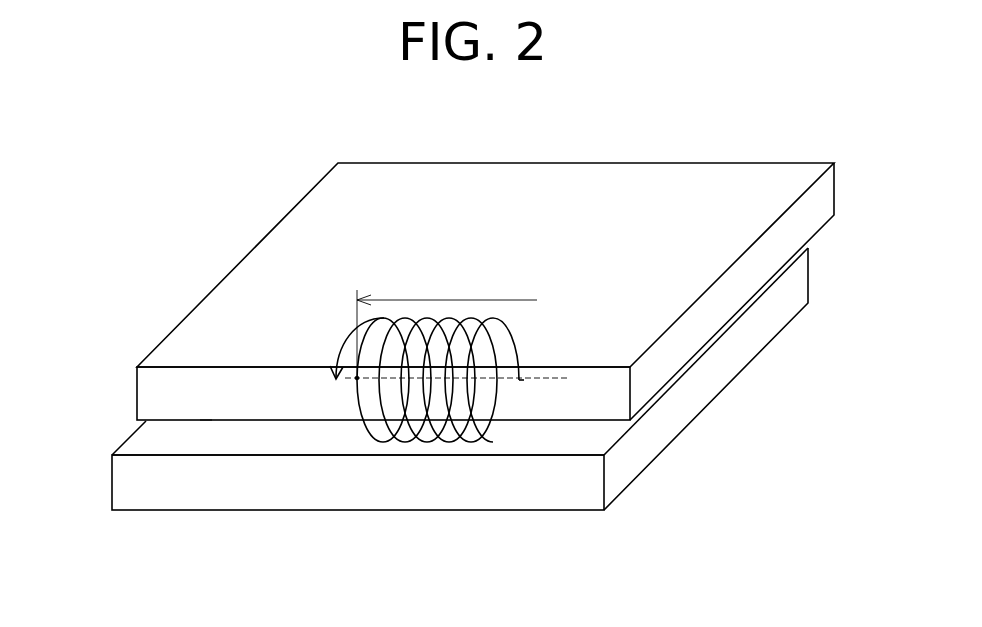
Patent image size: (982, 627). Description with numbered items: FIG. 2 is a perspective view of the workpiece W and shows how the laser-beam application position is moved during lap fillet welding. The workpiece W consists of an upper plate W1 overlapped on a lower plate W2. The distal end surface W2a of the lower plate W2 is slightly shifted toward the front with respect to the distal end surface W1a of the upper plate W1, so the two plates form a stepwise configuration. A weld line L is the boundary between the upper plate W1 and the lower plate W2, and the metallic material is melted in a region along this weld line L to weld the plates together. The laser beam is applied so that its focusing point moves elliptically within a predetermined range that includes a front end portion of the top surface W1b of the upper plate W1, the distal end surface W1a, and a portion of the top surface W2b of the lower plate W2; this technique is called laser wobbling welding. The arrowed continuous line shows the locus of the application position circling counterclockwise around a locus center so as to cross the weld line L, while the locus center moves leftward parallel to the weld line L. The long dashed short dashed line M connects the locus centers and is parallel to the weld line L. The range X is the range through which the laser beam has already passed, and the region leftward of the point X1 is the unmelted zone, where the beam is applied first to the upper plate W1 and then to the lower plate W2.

The workpiece W is at (170, 122).
The upper plate W1 is at (259, 243).
The distal end surface of the upper plate W1a is at (148, 398).
The top surface of the upper plate W1b is at (227, 303).
The lower plate W2 is at (263, 511).
The distal end surface of the lower plate W2a is at (136, 487).
The top surface of the lower plate W2b is at (147, 445).
The weld line L is at (208, 420).
The range through which the laser beam has already passed X is at (447, 320).
The point X1 is at (355, 380).
The long dashed short dashed line M is at (548, 377).